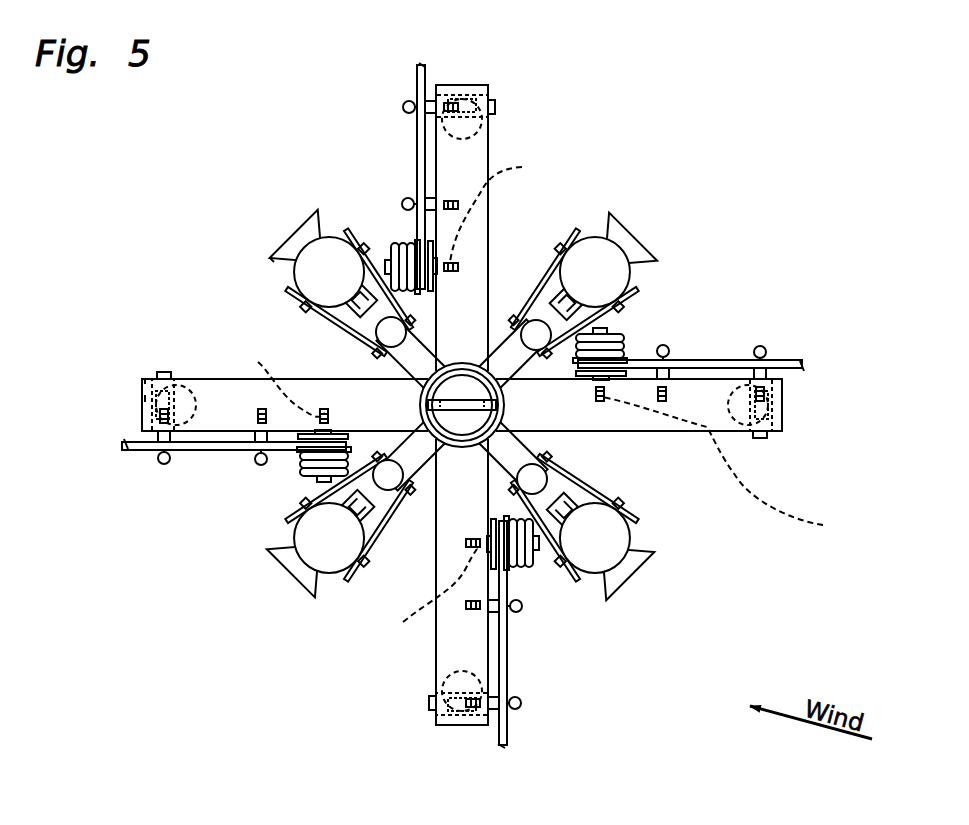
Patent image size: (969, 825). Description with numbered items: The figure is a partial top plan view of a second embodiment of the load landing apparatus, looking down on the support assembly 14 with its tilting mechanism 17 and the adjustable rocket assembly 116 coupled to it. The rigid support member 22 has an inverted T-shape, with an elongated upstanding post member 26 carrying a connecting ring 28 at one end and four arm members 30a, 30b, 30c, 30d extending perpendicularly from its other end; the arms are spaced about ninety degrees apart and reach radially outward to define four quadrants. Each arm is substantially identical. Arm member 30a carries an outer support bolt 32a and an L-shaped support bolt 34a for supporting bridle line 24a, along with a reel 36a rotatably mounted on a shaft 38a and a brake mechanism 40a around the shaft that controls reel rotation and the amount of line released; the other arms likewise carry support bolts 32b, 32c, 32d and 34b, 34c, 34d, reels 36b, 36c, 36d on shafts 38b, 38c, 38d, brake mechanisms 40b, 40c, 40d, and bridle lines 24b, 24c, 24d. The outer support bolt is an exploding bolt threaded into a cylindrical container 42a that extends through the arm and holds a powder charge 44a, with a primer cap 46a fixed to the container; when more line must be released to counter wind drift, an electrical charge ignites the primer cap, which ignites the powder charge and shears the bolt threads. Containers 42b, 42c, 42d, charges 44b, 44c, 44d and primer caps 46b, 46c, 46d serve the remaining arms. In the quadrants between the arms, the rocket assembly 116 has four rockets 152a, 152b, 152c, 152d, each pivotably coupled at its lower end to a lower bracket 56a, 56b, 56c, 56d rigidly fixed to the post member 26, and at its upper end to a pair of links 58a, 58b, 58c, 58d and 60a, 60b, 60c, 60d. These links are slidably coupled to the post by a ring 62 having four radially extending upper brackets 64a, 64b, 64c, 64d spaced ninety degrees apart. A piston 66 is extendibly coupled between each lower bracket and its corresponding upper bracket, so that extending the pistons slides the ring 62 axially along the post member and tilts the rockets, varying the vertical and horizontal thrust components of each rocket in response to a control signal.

The support assembly 14 is at (146, 366).
The tilting mechanism 17 is at (136, 383).
The rigid support member 22 is at (212, 364).
The adjustable rocket assembly 116 is at (272, 268).
The post member 26 is at (438, 378).
The connecting ring 28 is at (422, 383).
The ring 62 is at (498, 385).
The piston 66 is at (442, 353).
The arm member 30a is at (195, 376).
The arm member 30b is at (433, 663).
The arm member 30c is at (741, 448).
The arm member 30d is at (495, 152).
The outer support bolt 32a is at (165, 452).
The outer support bolt 32b is at (516, 712).
The outer support bolt 32c is at (770, 355).
The outer support bolt 32d is at (406, 100).
The support bolt 34a is at (235, 457).
The support bolt 34b is at (522, 618).
The support bolt 34c is at (733, 352).
The support bolt 34d is at (405, 198).
The reel 36a is at (308, 470).
The reel 36b is at (545, 565).
The reel 36c is at (627, 338).
The reel 36d is at (395, 252).
The shaft 38a is at (280, 377).
The shaft 38b is at (430, 596).
The shaft 38c is at (733, 468).
The shaft 38d is at (504, 207).
The brake mechanism 40a is at (290, 462).
The brake mechanism 40b is at (530, 610).
The brake mechanism 40c is at (668, 348).
The brake mechanism 40d is at (432, 248).
The cylindrical container 42a is at (188, 377).
The cylindrical container 42b is at (440, 682).
The cylindrical container 42c is at (745, 367).
The cylindrical container 42d is at (458, 112).
The powder charge 44a is at (143, 395).
The powder charge 44b is at (452, 718).
The powder charge 44c is at (783, 410).
The powder charge 44d is at (470, 90).
The primer cap 46a is at (163, 372).
The primer cap 46b is at (430, 706).
The primer cap 46c is at (782, 430).
The primer cap 46d is at (485, 108).
The lower bracket 56a is at (390, 365).
The lower bracket 56b is at (430, 458).
The lower bracket 56c is at (598, 452).
The lower bracket 56d is at (507, 315).
The link 58a is at (235, 363).
The link 58b is at (355, 580).
The link 58c is at (624, 504).
The link 58d is at (568, 240).
The link 60a is at (330, 236).
The link 60b is at (293, 543).
The link 60c is at (595, 585).
The link 60d is at (632, 274).
The upper bracket 64a is at (392, 370).
The upper bracket 64b is at (362, 550).
The upper bracket 64c is at (600, 473).
The upper bracket 64d is at (500, 322).
The rocket 152a is at (323, 202).
The rocket 152b is at (318, 598).
The rocket 152c is at (632, 532).
The rocket 152d is at (585, 236).
The bridle line 24a is at (186, 462).
The bridle line 24b is at (514, 674).
The bridle line 24c is at (768, 350).
The bridle line 24d is at (408, 132).